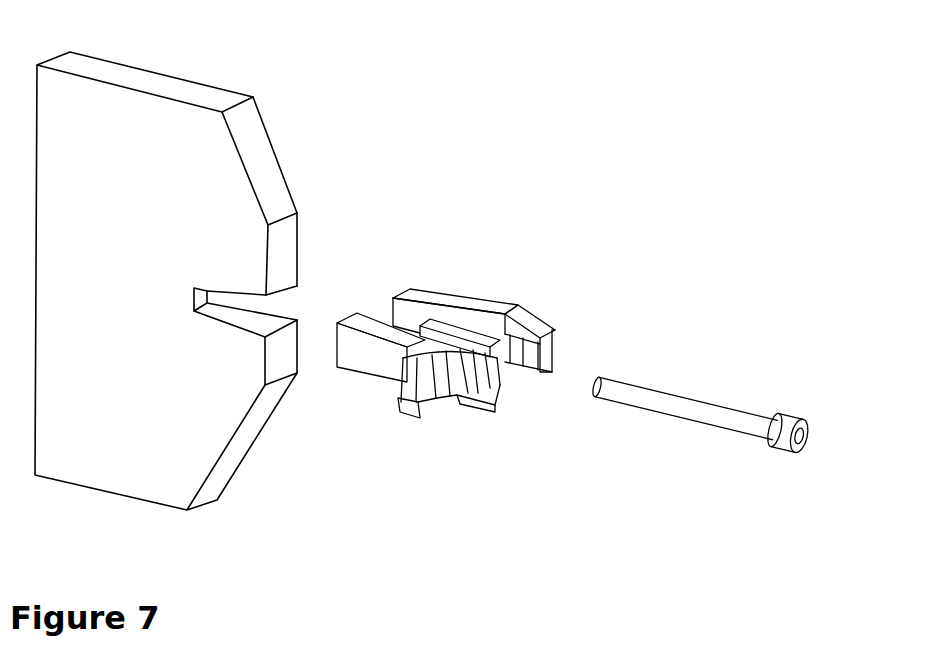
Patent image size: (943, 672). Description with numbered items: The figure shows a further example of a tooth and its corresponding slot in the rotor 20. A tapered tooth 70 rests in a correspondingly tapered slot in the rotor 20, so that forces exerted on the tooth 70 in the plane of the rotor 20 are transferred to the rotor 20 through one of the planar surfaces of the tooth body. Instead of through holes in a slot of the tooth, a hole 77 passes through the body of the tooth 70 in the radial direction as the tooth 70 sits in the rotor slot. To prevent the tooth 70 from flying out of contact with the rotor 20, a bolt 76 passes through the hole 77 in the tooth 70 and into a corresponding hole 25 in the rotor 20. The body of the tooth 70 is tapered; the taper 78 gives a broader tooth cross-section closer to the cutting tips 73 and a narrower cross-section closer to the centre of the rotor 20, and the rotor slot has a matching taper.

The rotor 20 is at (286, 88).
The hole 25 is at (207, 293).
The tapered tooth 70 is at (430, 270).
The cutting tips 73 is at (492, 400).
The bolt 76 is at (713, 405).
The hole 77 is at (482, 347).
The taper 78 is at (426, 325).